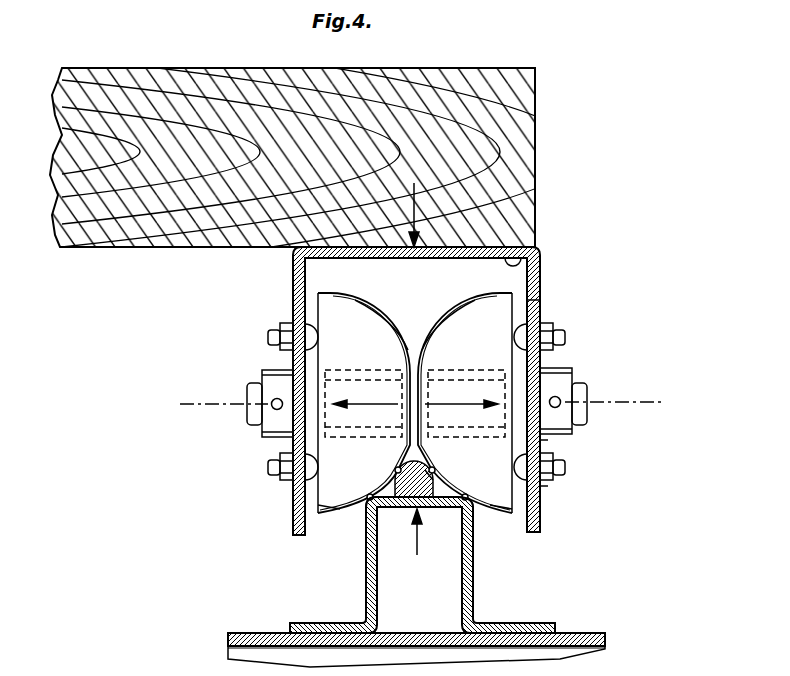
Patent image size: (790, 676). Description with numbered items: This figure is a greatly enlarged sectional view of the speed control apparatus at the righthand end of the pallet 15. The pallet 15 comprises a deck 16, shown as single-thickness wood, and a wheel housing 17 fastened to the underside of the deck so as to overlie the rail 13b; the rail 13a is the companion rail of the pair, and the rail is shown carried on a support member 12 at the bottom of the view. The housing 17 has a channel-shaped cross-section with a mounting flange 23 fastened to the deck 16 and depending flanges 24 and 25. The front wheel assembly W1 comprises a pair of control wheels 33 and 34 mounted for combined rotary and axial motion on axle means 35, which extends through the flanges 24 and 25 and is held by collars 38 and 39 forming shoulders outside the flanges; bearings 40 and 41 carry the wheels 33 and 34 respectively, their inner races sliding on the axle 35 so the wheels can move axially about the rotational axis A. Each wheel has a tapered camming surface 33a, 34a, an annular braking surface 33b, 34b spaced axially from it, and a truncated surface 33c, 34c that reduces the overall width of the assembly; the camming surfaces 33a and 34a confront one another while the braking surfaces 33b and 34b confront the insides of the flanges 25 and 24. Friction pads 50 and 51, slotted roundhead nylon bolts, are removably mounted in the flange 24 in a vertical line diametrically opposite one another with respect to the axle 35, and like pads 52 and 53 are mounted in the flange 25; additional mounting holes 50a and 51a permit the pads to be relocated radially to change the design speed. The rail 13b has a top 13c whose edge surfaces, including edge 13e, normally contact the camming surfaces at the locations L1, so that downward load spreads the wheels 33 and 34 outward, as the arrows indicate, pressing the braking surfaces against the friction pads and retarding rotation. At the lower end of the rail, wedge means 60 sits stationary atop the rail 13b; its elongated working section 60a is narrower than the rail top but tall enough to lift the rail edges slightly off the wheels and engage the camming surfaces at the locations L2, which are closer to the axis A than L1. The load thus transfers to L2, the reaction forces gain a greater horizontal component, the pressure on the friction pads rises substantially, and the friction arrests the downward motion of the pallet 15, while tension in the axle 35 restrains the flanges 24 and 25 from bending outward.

The base plate 12 is at (240, 640).
The rail 13a is at (470, 505).
The rail 13b is at (474, 596).
The top of the rail 13c is at (436, 502).
The edge surface 13e is at (368, 502).
The pallet 15 is at (102, 72).
The deck 16 is at (527, 122).
The wheel housing 17 is at (543, 282).
The mounting flange 23 is at (542, 247).
The depending flange 24 is at (545, 452).
The depending flange 25 is at (292, 278).
The control wheel 33 is at (387, 355).
The tapered camming surface 33a is at (418, 286).
The annular braking surface 33b is at (318, 506).
The truncated surface 33c is at (393, 425).
The control wheel 34 is at (470, 345).
The tapered camming surface 34a is at (450, 305).
The annular braking surface 34b is at (514, 506).
The truncated surface 34c is at (475, 425).
The axle means 35 is at (542, 376).
The collar 38 is at (562, 380).
The collar 39 is at (272, 379).
The bearing 40 is at (332, 370).
The bearing 41 is at (470, 370).
The friction pad 50 is at (522, 470).
The mounting hole 50a is at (540, 490).
The friction pad 51 is at (510, 332).
The mounting hole 51a is at (533, 300).
The friction pad 52 is at (395, 473).
The friction pad 53 is at (322, 332).
The wedge means 60 is at (408, 490).
The working section 60a is at (497, 484).
The rotational axis A is at (650, 402).
The wheel assembly W1 is at (290, 454).
The points of engagement L1 is at (492, 522).
The points of engagement L2 is at (452, 462).